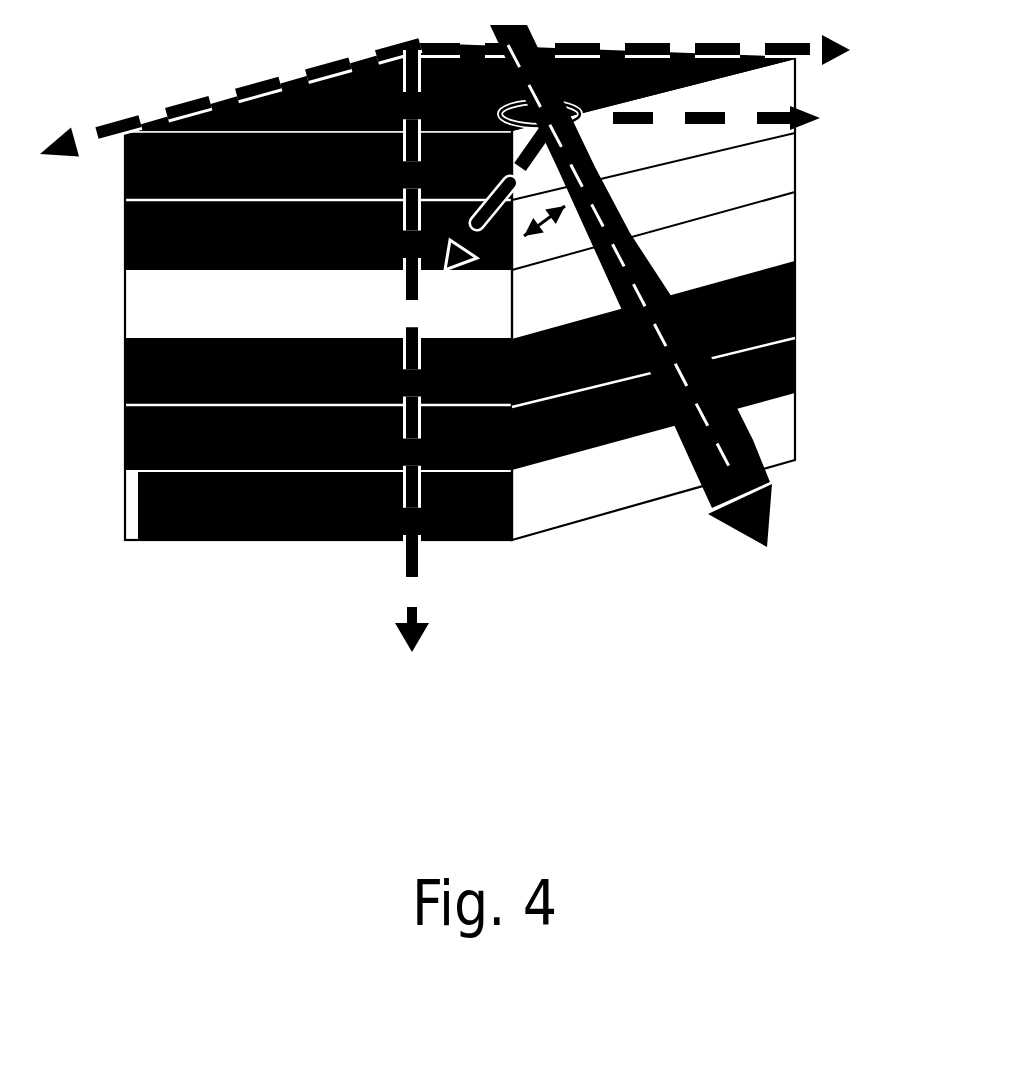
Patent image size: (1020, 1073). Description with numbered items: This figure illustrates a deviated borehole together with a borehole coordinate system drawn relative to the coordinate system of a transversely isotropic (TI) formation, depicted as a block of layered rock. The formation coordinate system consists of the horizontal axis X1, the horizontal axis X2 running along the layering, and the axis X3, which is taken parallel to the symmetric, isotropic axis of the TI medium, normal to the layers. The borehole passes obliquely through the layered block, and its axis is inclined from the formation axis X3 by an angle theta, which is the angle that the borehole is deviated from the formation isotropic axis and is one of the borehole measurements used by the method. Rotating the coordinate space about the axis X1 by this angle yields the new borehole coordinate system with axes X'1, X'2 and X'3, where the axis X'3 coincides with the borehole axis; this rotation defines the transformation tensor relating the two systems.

The X1 axis X1 is at (659, 32).
The X2 axis X2 is at (230, 100).
The X3 axis X3 is at (438, 358).
The X'1 axis X'1 is at (755, 149).
The X'2 axis X'2 is at (494, 233).
The X'3 axis X'3 is at (671, 300).